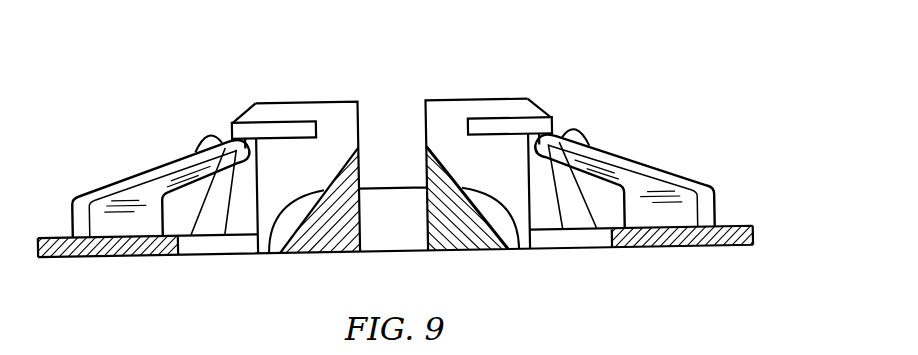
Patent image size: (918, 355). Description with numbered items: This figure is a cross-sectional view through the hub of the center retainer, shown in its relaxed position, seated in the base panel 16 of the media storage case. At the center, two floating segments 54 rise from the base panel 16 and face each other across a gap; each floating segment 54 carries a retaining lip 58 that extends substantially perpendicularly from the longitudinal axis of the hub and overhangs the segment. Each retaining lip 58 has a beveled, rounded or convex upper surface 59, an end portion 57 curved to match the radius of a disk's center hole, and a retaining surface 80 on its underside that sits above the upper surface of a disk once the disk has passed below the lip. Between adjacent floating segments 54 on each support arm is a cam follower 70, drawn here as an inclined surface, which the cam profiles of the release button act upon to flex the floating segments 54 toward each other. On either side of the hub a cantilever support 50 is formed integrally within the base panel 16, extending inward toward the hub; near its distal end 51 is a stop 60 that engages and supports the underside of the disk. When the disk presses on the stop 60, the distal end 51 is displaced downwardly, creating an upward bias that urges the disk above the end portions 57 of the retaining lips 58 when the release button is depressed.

The base panel 16 is at (739, 227).
The cantilever support 50 is at (126, 178).
The distal end 51 is at (208, 230).
The floating segment 54 is at (332, 101).
The end portion 57 is at (562, 125).
The retaining lip 58 is at (246, 113).
The upper surface 59 is at (538, 102).
The stop 60 is at (198, 133).
The cam follower 70 is at (270, 253).
The retaining surface 80 is at (228, 230).